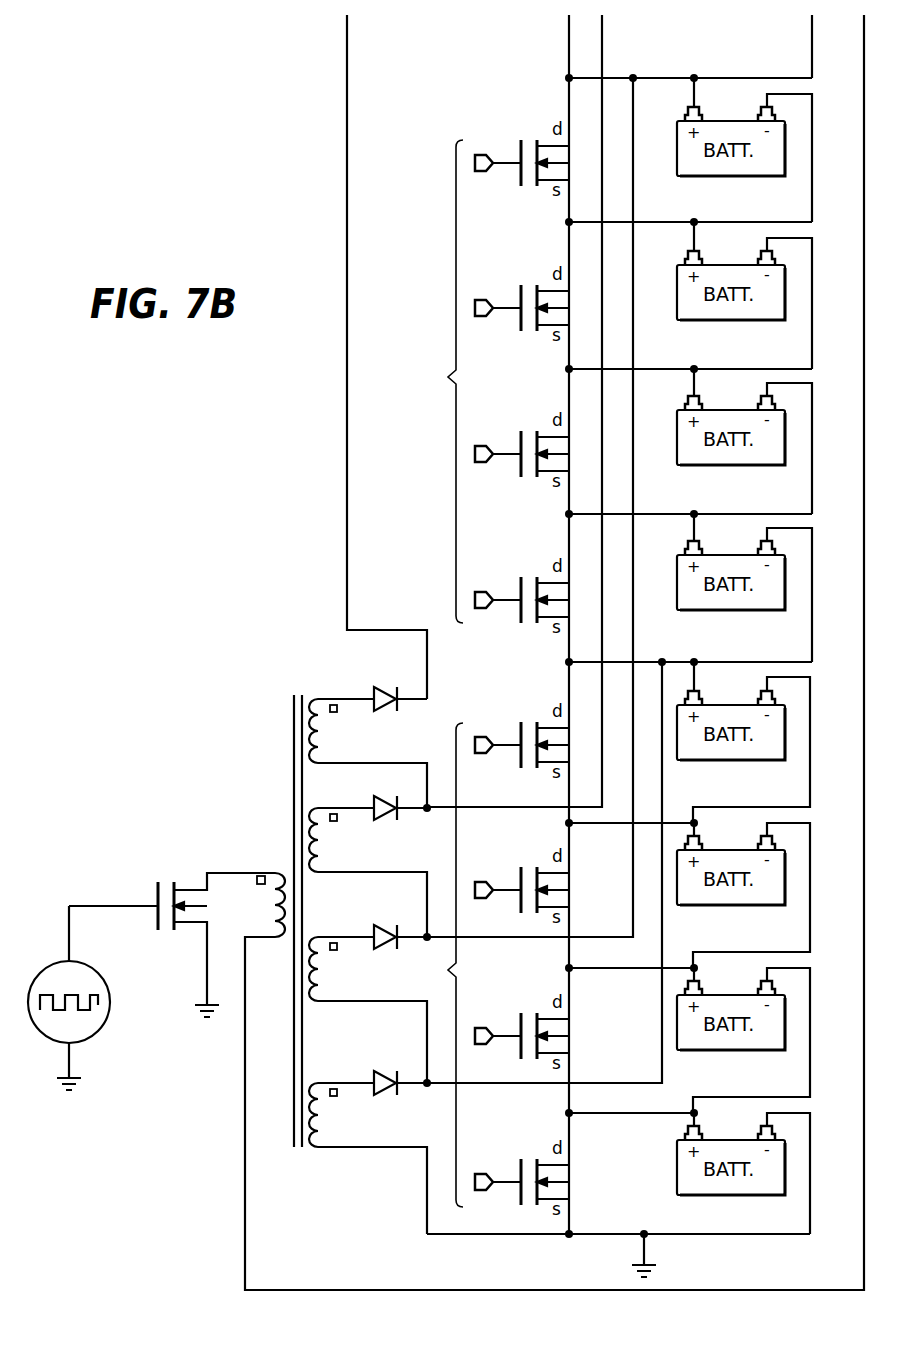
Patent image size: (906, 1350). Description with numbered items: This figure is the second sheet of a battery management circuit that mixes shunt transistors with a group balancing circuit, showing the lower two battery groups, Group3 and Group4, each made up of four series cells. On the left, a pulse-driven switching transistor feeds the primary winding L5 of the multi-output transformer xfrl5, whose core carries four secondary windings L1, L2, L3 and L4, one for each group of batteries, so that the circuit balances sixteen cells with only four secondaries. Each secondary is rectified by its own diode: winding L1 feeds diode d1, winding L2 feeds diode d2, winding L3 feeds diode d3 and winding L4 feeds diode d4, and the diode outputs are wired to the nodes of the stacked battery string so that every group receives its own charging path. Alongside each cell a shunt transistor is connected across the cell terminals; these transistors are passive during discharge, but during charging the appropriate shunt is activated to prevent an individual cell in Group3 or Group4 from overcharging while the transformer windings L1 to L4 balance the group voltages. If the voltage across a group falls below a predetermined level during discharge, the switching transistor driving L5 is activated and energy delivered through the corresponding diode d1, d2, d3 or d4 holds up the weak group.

The transformer xfrl5 is at (263, 921).
The voltage balancing winding L5 is at (259, 893).
The secondary winding L1 is at (335, 721).
The secondary winding L2 is at (335, 830).
The secondary winding L3 is at (335, 959).
The secondary winding L4 is at (335, 1105).
The diode d1 is at (372, 685).
The diode d2 is at (372, 797).
The diode d3 is at (372, 926).
The diode d4 is at (372, 1072).
The battery group Group3 is at (420, 381).
The battery group Group4 is at (420, 965).